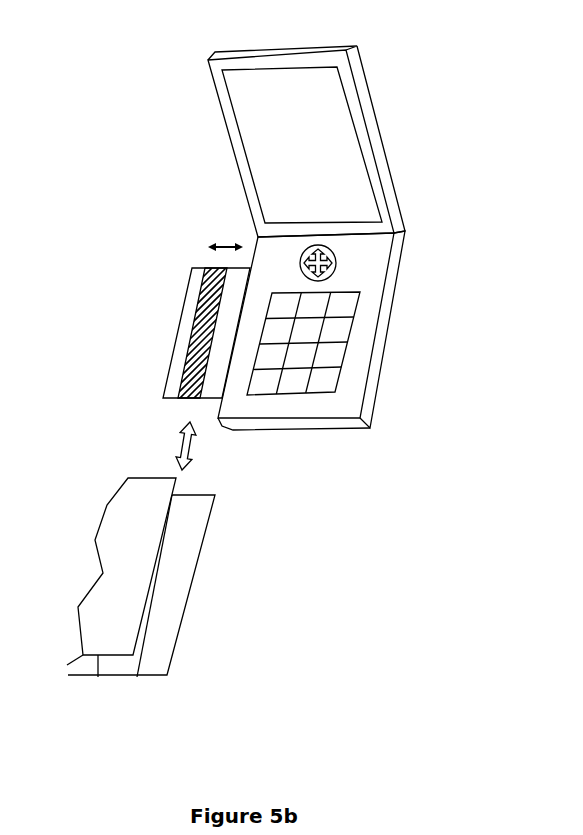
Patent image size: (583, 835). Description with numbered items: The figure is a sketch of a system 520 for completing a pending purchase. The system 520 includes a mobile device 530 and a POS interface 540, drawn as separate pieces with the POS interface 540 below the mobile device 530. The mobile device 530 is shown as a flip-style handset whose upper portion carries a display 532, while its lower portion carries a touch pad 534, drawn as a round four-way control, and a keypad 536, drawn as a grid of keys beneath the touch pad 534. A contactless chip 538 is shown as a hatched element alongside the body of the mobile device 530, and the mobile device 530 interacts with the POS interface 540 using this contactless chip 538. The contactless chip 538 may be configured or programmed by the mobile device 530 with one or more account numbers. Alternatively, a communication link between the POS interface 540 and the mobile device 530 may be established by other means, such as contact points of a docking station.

The system 520 is at (505, 82).
The mobile device 530 is at (386, 422).
The display 532 is at (345, 145).
The touch pad 534 is at (337, 263).
The keypad 536 is at (337, 333).
The contactless chip 538 is at (203, 268).
The POS interface 540 is at (128, 502).